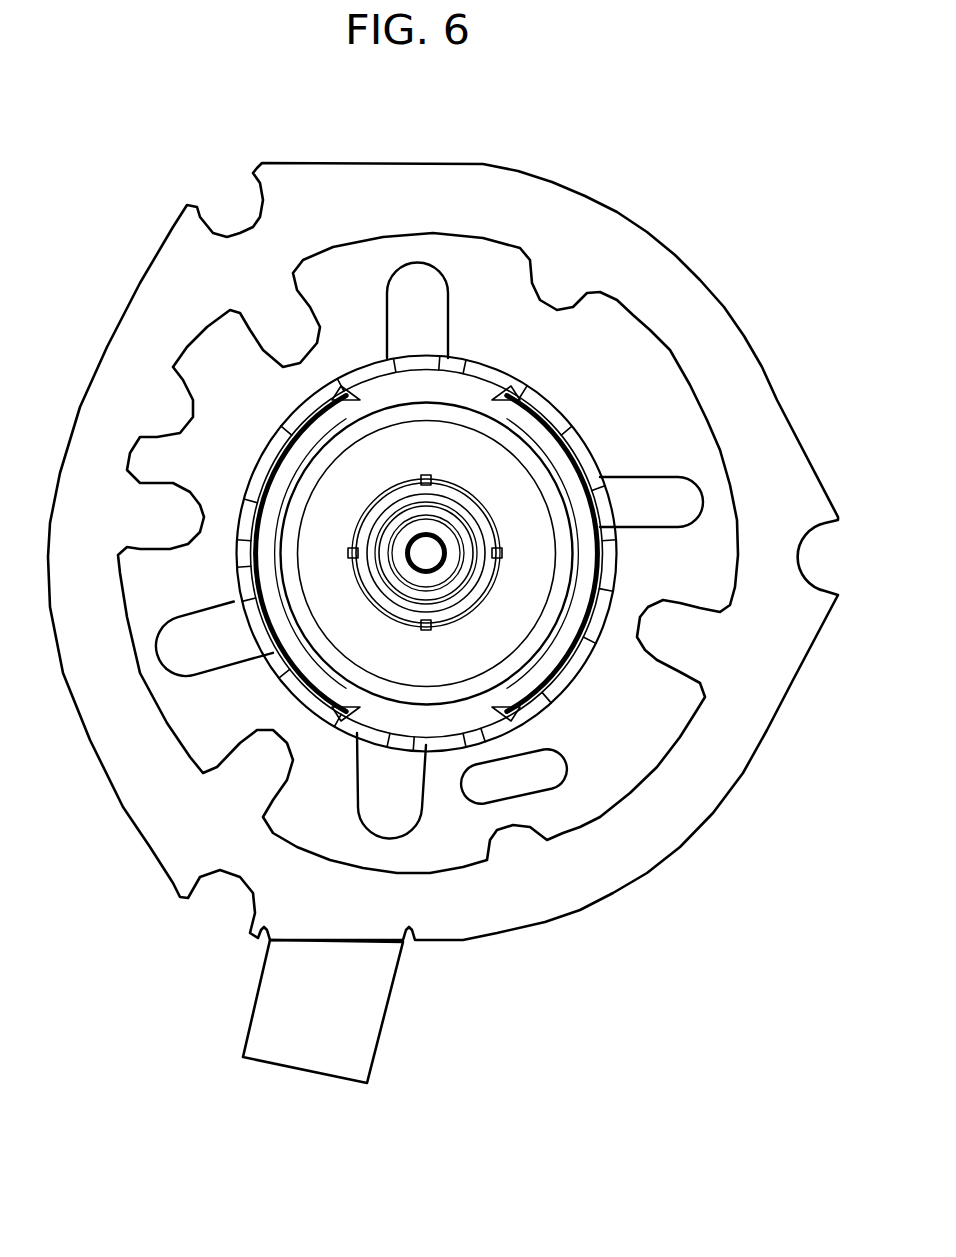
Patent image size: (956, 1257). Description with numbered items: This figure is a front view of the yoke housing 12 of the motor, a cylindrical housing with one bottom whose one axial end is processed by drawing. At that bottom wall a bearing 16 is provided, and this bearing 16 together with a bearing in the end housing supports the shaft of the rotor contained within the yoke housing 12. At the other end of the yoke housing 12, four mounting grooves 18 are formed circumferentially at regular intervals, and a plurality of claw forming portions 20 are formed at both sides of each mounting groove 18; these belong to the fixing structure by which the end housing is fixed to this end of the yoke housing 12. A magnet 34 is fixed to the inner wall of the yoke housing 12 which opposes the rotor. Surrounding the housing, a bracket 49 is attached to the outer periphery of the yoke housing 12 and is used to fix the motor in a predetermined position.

The yoke housing 12 is at (245, 620).
The bearing 16 is at (450, 538).
The mounting grooves 18 is at (518, 380).
The claw forming portions 20 is at (467, 368).
The magnet 34 is at (600, 530).
The bracket 49 is at (546, 178).